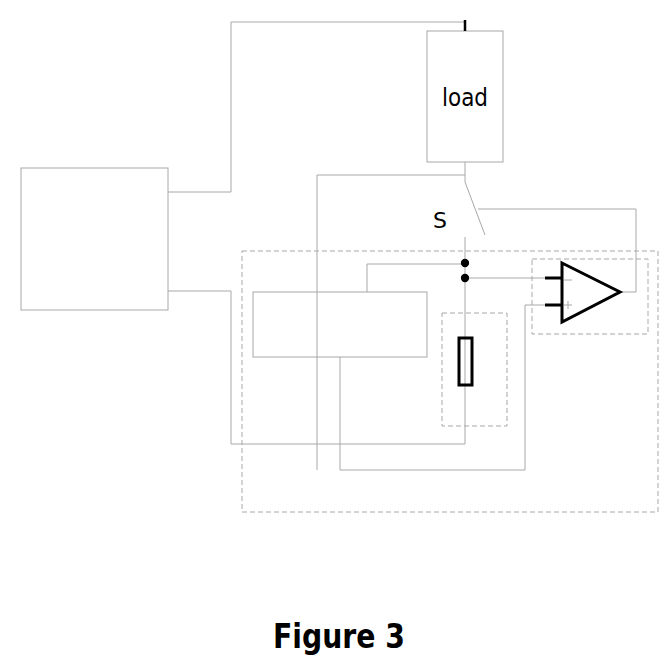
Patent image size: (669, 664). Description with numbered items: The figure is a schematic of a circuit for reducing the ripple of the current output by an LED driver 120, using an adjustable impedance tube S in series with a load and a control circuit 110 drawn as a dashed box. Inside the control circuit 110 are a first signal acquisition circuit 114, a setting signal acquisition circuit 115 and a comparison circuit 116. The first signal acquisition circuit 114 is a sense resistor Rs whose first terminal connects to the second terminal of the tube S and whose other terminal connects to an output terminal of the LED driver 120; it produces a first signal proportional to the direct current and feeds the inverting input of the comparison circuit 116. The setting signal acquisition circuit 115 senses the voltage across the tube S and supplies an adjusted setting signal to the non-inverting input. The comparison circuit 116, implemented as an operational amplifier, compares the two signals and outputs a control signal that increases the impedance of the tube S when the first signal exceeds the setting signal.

The control circuit 110 is at (463, 512).
The first signal acquisition circuit 114 is at (492, 426).
The setting signal acquisition circuit 115 is at (348, 357).
The comparison circuit 116 is at (558, 334).
The LED driver 120 is at (69, 168).